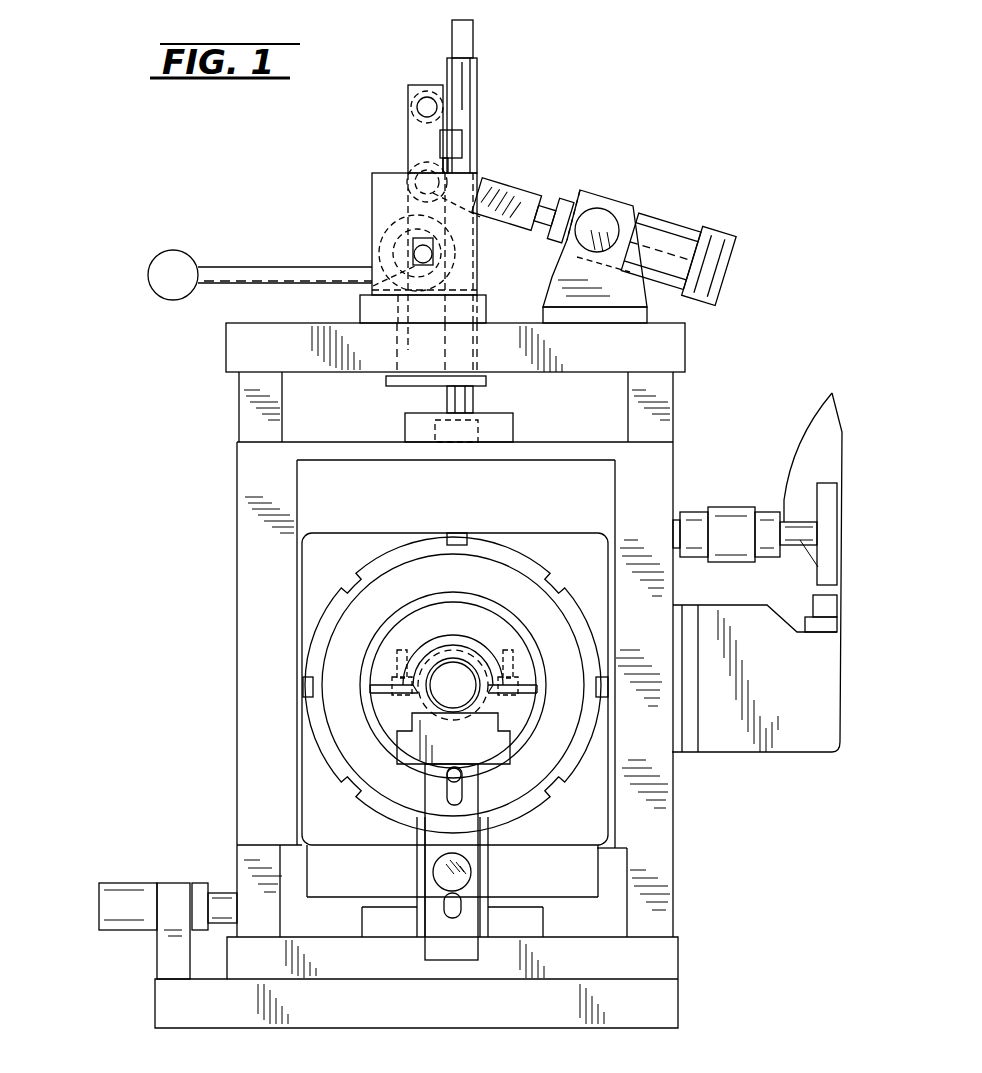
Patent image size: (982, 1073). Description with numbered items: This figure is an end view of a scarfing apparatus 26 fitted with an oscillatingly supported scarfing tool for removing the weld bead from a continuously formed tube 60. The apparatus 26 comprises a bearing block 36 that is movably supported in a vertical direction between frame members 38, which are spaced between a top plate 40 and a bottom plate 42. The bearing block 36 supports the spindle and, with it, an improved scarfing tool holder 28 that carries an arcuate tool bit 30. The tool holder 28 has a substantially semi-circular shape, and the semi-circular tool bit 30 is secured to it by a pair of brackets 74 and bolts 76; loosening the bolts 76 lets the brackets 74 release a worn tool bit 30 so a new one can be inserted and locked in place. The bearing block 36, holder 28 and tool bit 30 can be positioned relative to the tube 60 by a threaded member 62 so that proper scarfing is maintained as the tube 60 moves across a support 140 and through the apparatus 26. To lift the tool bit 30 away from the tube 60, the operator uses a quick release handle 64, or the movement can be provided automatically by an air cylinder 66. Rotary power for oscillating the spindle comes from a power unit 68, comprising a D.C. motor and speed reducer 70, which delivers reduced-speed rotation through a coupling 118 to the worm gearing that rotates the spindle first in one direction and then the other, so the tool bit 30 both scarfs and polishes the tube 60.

The scarfing apparatus 26 is at (212, 486).
The scarfing tool holder 28 is at (455, 634).
The arcuate tool bit 30 is at (482, 650).
The bearing block 36 is at (600, 486).
The frame members 38 is at (240, 566).
The top plate 40 is at (686, 356).
The bottom plate 42 is at (680, 956).
The tube 60 is at (482, 700).
The threaded member 62 is at (473, 45).
The quick release handle 64 is at (242, 268).
The air cylinder 66 is at (660, 212).
The power unit 68 is at (798, 440).
The speed reducer 70 is at (830, 476).
The brackets 74 is at (395, 700).
The bolts 76 is at (396, 698).
The coupling 118 is at (738, 507).
The support 140 is at (491, 762).